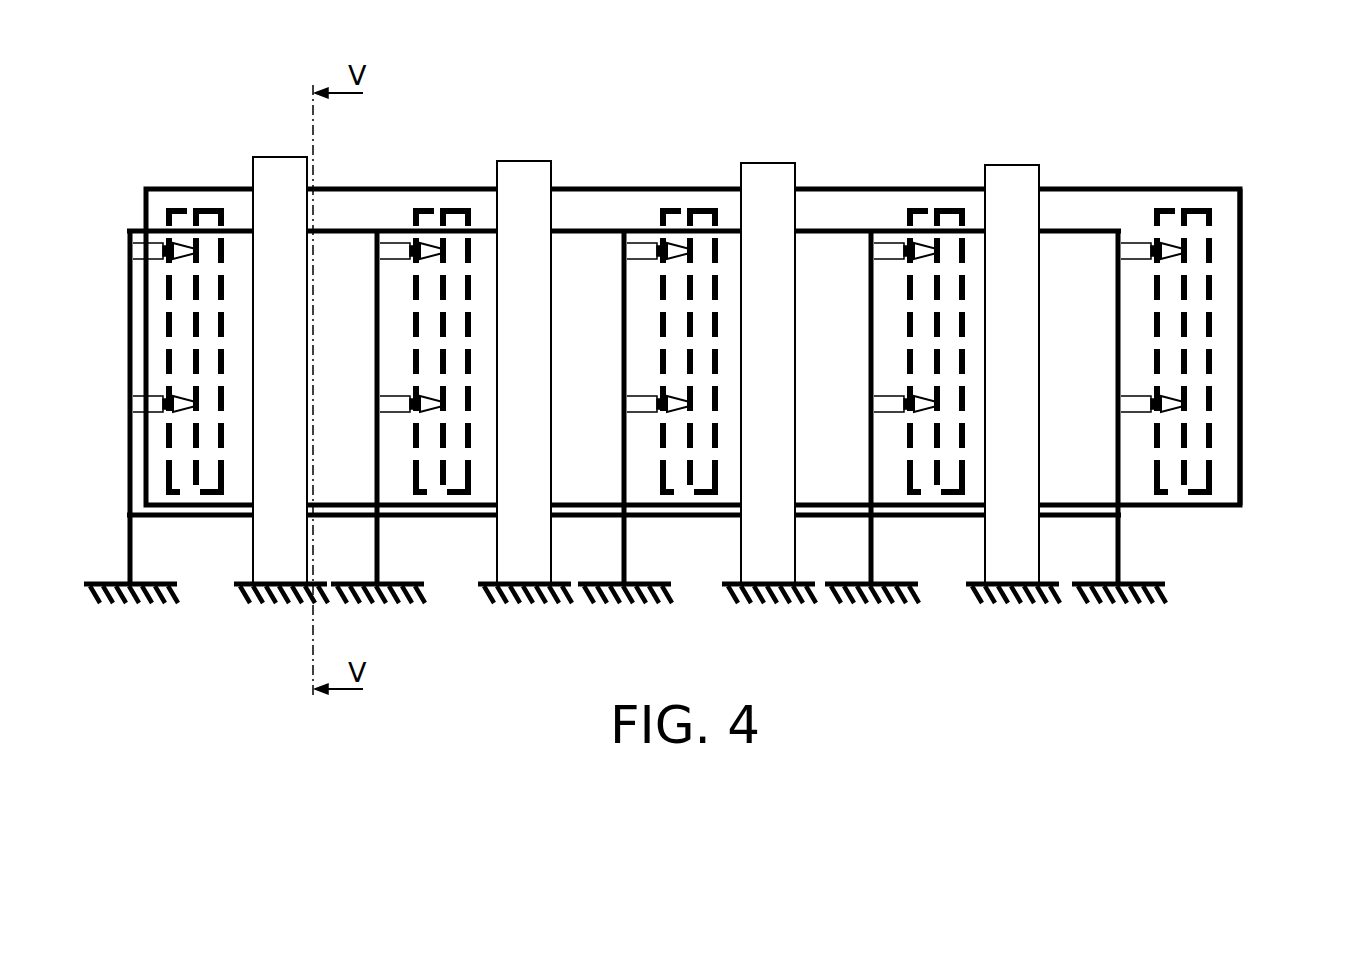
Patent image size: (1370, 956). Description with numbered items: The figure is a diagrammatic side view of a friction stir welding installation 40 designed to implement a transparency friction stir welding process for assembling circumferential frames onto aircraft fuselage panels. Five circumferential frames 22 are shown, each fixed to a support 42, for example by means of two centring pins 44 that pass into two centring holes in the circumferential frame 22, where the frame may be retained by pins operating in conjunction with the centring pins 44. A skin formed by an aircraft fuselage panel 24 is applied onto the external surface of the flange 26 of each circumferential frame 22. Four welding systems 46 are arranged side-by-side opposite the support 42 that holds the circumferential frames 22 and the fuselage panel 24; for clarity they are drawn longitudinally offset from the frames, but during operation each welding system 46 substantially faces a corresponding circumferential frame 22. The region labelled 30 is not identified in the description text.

The circumferential frame 22 is at (174, 200).
The aircraft fuselage panel 24 is at (1243, 372).
The flange 26 is at (211, 212).
The cell stack 30 is at (192, 460).
The friction stir welding installation 40 is at (1248, 162).
The support 42 is at (1122, 568).
The centring pin 44 is at (1133, 256).
The welding system 46 is at (274, 150).